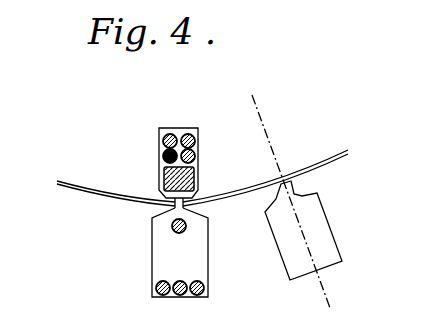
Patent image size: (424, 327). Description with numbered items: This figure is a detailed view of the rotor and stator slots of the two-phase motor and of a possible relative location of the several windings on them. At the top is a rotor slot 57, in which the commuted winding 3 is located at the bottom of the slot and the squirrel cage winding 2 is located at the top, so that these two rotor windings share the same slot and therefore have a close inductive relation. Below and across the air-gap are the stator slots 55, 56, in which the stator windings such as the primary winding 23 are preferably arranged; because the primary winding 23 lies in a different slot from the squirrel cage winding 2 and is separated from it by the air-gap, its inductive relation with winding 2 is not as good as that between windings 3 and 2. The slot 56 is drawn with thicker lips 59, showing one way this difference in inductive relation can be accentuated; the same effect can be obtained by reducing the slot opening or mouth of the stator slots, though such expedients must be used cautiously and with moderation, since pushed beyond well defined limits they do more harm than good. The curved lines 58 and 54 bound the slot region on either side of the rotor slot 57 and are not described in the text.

The rotor slots 57 is at (180, 128).
The commuted winding 3 is at (196, 151).
The squirrel cage winding 2 is at (164, 178).
The left partition wall 58 is at (72, 181).
The right partition wall 54 is at (330, 167).
The stator slot 55 is at (152, 266).
The primary winding 23 is at (185, 283).
The stator slot 56 is at (327, 222).
The thicker lips 59 is at (303, 197).